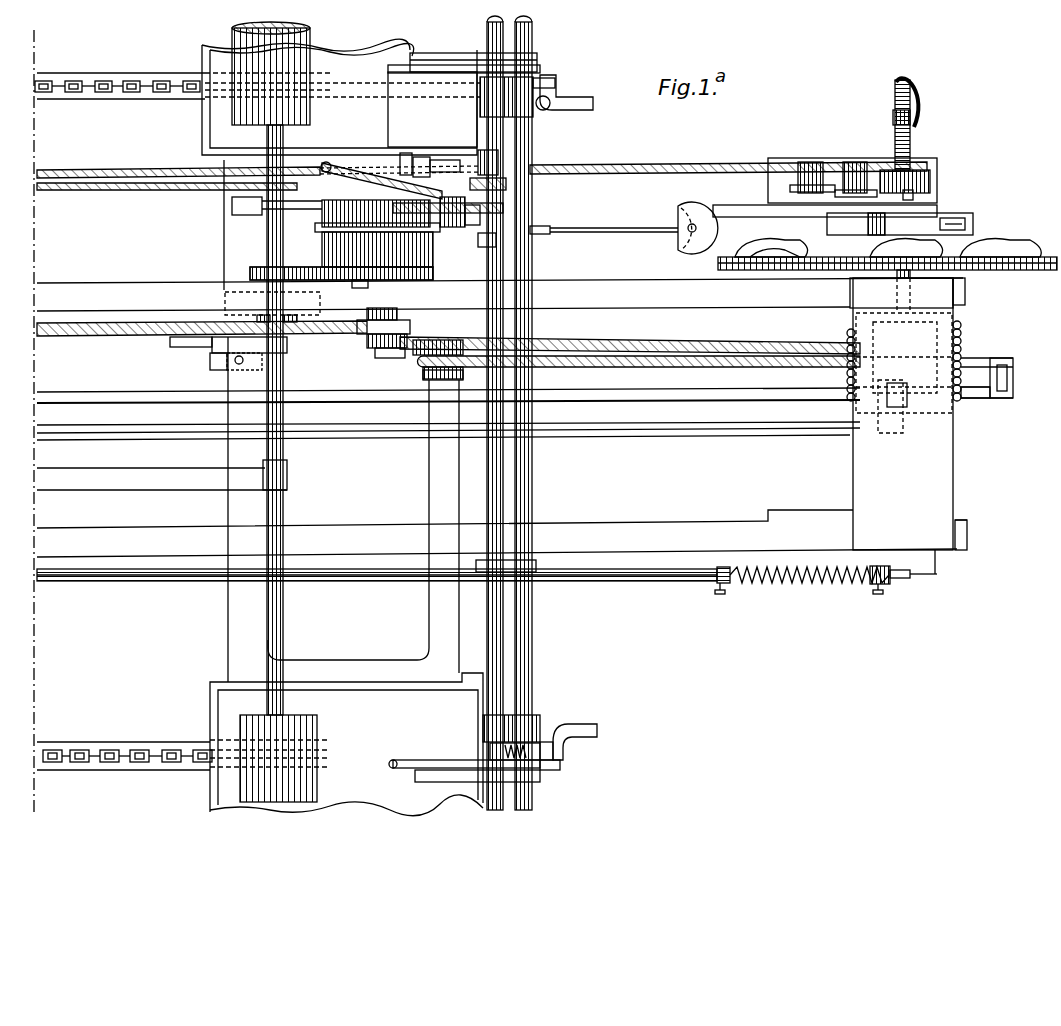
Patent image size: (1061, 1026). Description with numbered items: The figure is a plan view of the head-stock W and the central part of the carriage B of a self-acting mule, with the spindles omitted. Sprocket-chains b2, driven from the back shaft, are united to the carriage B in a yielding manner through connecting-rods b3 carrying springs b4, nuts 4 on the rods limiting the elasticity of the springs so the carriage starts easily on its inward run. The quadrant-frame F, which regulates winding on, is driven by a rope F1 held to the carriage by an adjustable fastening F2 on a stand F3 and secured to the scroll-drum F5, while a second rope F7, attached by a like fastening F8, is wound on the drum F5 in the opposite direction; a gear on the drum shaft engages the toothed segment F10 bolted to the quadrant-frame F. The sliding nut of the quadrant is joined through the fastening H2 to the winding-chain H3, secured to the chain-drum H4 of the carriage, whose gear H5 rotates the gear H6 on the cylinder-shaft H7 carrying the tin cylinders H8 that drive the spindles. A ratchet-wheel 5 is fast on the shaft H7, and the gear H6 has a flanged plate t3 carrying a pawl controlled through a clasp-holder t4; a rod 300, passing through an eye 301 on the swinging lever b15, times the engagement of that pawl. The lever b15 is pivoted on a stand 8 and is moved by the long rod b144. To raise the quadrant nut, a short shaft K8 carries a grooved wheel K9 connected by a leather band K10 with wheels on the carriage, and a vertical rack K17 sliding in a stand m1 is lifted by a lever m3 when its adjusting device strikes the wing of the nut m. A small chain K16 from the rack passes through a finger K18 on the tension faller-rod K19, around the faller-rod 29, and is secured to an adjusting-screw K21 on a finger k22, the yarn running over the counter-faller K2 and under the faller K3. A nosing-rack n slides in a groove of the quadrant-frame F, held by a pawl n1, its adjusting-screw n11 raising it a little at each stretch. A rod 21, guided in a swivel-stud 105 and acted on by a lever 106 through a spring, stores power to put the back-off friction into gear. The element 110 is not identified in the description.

The metallic flexible connections b2 is at (110, 86).
The tin cylinders H8 is at (235, 112).
The counter-faller K2 is at (424, 66).
The faller K3 is at (455, 58).
The adjusting-screw K21 is at (390, 195).
The rack K17 is at (412, 162).
The stand m1 is at (427, 156).
The lever m3 is at (466, 168).
The finger K18 is at (537, 173).
The small chain K16 is at (553, 187).
The band K10 is at (676, 168).
The short shaft K8 is at (895, 135).
The nut m is at (914, 122).
The grooved wheel K9 is at (918, 164).
The quadrant-frame F is at (745, 202).
The pin 110 is at (908, 194).
The pawl n1 is at (913, 222).
The adjusting-screw n11 is at (968, 220).
The nosing-rack n is at (827, 223).
The winding-chain H3 is at (550, 228).
The winding-chain fastening H2 is at (614, 215).
The chain-drum H4 is at (330, 250).
The gear H5 is at (435, 274).
The gear H6 is at (250, 274).
The finger k22 is at (496, 245).
The quadrant-segment F10 is at (998, 268).
The flanged plate t3 is at (224, 298).
The ratchet-wheel 5 is at (340, 312).
The rope F1 is at (164, 336).
The clasp-holder t4 is at (187, 348).
The adjustable fastening F2 is at (365, 345).
The stand F3 is at (420, 368).
The fastening F8 is at (428, 380).
The cylinder-shaft H7 is at (265, 390).
The rope F7 is at (660, 368).
The rod 300 is at (604, 395).
The long rod b144 is at (737, 424).
The scroll-drum F5 is at (962, 323).
The stand 8 is at (987, 367).
The projecting eye 301 is at (908, 410).
The swinging lever b15 is at (980, 399).
The head-stock W is at (377, 553).
The rod 21 is at (676, 578).
The lever 106 is at (858, 584).
The swivel-stud 105 is at (877, 586).
The faller-rod 29 is at (487, 622).
The counter faller-rod K19 is at (532, 634).
The carriage B is at (230, 655).
The springs b4 is at (522, 745).
The connecting-rods b3 is at (556, 755).
The nuts 4 is at (546, 772).